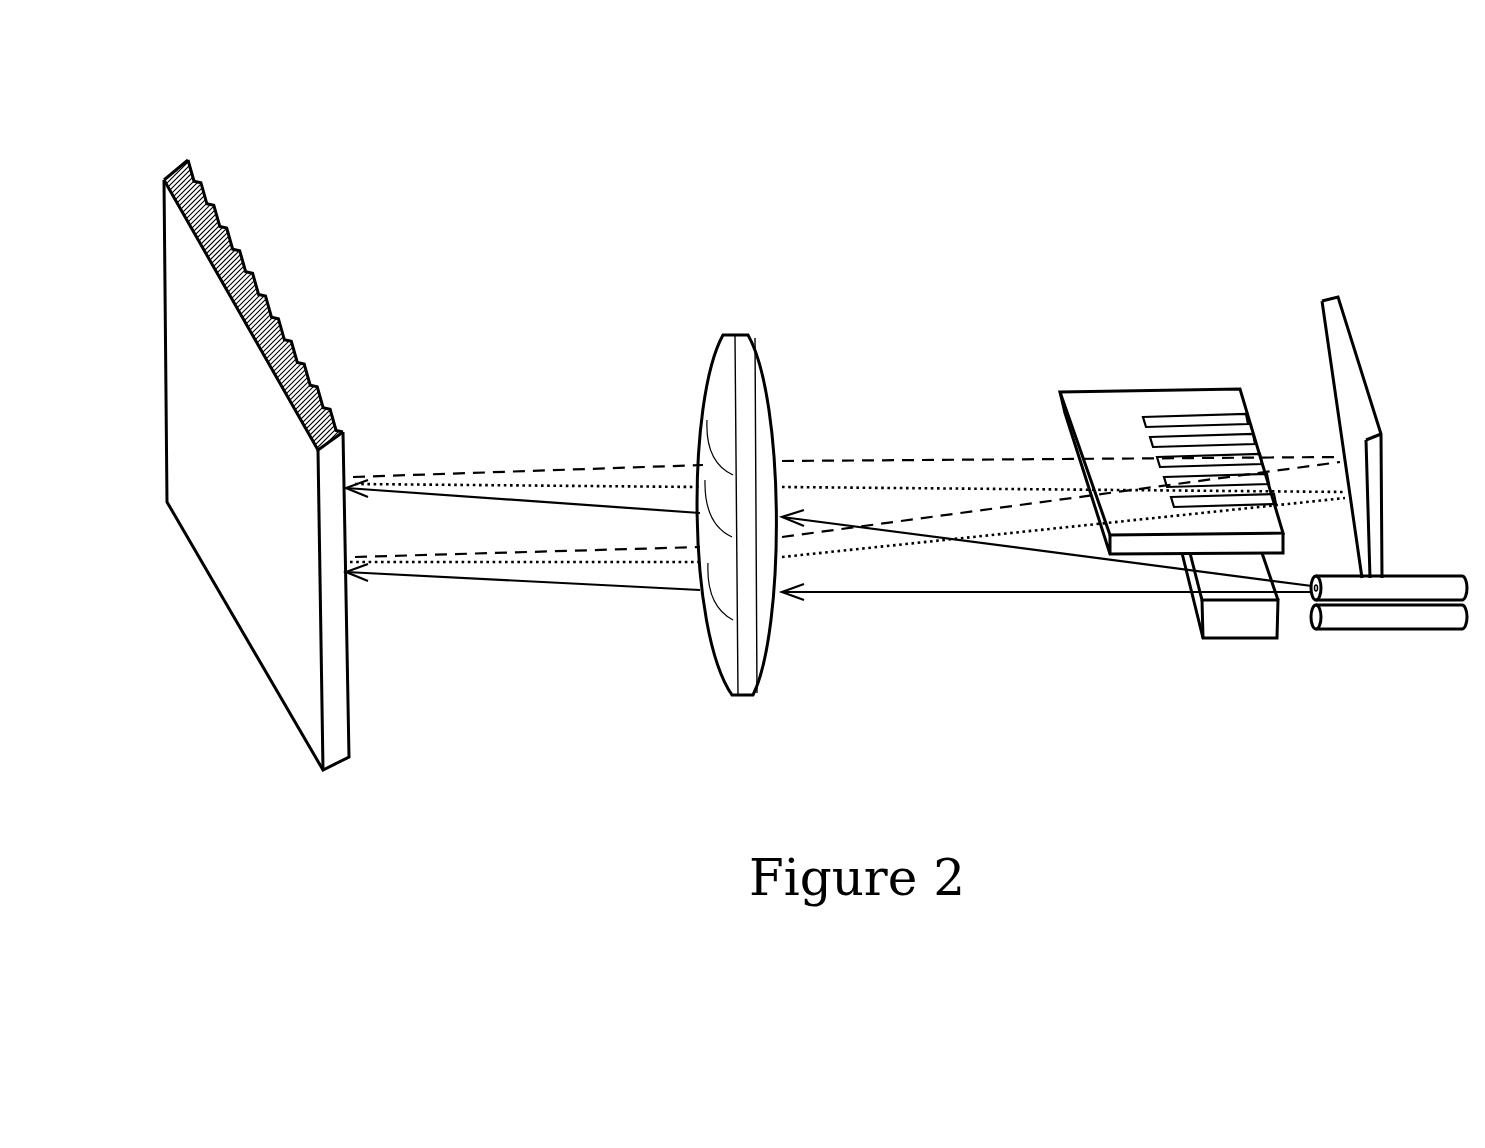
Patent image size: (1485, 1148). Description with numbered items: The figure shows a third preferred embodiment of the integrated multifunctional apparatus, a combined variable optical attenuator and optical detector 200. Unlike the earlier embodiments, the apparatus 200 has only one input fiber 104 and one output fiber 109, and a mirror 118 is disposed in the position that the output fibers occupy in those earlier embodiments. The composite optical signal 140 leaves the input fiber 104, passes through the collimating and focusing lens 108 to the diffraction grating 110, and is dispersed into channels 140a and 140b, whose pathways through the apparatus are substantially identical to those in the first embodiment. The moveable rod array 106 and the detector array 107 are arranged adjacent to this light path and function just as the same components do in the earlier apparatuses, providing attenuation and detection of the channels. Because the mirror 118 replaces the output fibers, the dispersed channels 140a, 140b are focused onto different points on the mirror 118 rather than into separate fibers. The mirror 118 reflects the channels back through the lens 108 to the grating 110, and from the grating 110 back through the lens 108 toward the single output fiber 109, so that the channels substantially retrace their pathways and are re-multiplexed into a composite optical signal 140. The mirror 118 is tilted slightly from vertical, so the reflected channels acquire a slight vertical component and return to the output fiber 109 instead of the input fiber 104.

The combined variable optical attenuator and optical detector 200 is at (745, 157).
The diffraction grating 110 is at (227, 220).
The collimating and focusing lens 108 is at (740, 357).
The composite optical signal 140 is at (513, 503).
The dispersed channel 140a is at (528, 468).
The dispersed channel 140b is at (653, 487).
The moveable rod array 106 is at (1172, 388).
The detector array 107 is at (1261, 641).
The mirror 118 is at (1336, 297).
The input fiber 104 is at (1443, 576).
The output fiber 109 is at (1427, 629).